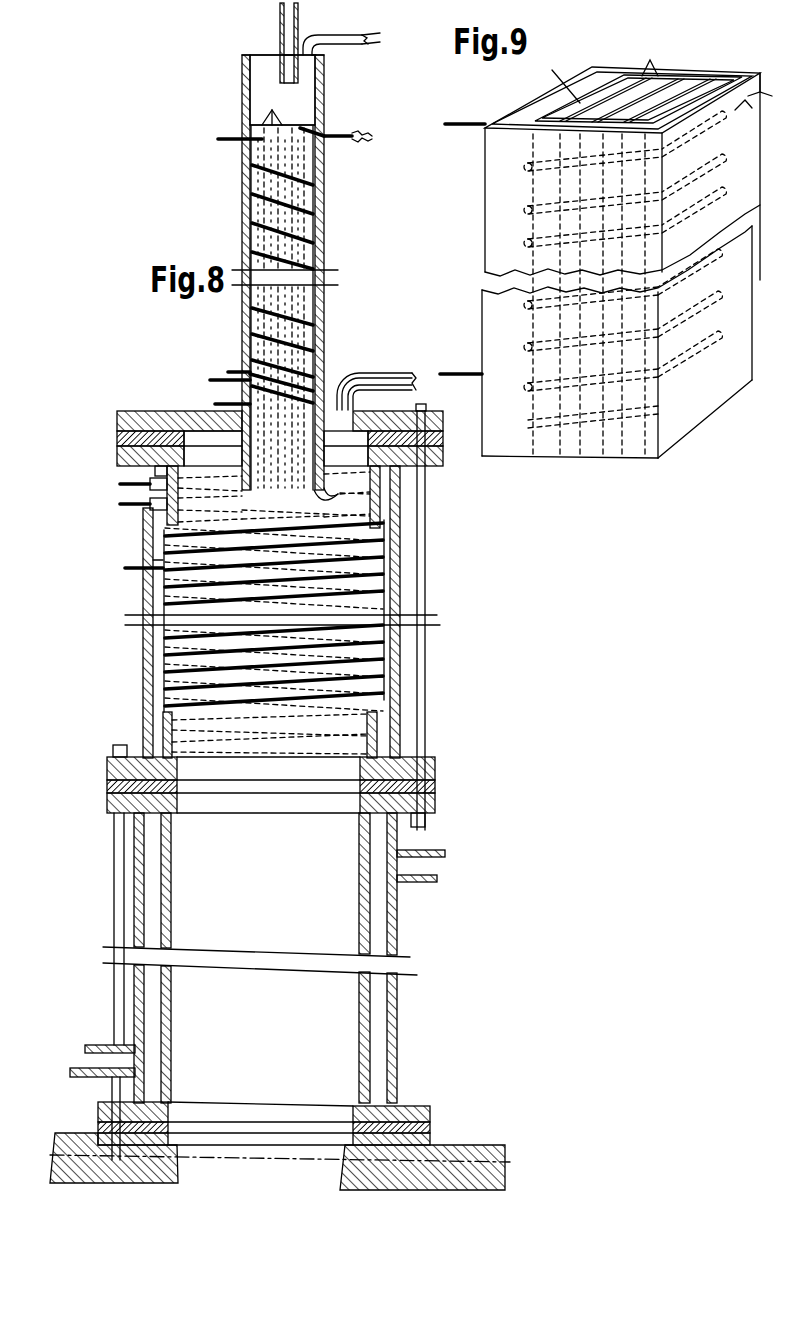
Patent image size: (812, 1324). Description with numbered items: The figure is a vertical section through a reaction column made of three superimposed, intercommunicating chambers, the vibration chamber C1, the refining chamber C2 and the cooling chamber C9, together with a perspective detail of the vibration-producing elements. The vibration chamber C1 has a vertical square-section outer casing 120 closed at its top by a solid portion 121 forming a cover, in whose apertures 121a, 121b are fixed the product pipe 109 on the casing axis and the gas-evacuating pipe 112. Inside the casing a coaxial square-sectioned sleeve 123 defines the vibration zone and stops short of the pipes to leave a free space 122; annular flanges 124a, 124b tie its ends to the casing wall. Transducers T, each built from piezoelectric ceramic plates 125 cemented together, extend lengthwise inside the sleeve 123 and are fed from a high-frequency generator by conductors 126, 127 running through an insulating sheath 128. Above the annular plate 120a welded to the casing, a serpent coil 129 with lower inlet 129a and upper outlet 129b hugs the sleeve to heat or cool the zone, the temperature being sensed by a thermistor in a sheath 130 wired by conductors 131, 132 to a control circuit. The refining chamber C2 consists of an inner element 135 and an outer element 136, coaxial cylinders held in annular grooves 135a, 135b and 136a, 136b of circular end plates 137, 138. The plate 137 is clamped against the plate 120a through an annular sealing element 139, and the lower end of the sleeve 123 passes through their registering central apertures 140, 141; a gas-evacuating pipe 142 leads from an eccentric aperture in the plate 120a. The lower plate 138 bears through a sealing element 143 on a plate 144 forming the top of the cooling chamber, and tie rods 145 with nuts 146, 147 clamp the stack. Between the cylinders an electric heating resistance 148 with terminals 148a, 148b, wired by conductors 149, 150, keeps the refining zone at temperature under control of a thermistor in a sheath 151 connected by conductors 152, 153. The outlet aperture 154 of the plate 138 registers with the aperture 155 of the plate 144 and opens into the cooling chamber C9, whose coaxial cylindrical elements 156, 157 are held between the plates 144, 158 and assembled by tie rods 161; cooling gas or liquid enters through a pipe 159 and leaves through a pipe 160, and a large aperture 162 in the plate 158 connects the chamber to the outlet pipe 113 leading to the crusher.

In FIG. 8, the pipe 109 is at (299, 30).
In FIG. 8, the gas-evacuating pipe 112 is at (336, 34).
In FIG. 8, the outlet pipe 113 is at (352, 1160).
In FIG. 8, the outer casing 120 is at (325, 190).
In FIG. 9, the outer casing 120 is at (485, 172).
In FIG. 8, the annular plate 120a is at (162, 410).
In FIG. 8, the solid portion 121 is at (260, 57).
In FIG. 8, the aperture 121a is at (286, 54).
In FIG. 8, the aperture 121b is at (326, 52).
In FIG. 8, the free space 122 is at (250, 80).
In FIG. 8, the tubular element 123 is at (322, 226).
In FIG. 9, the tubular element 123 is at (553, 103).
In FIG. 8, the annular flange 124a is at (256, 118).
In FIG. 8, the annular flange 124b is at (326, 489).
In FIG. 9, the plates 125 is at (600, 82).
In FIG. 8, the conductor 126 is at (352, 130).
In FIG. 9, the conductor 126 is at (760, 92).
In FIG. 8, the conductor 127 is at (365, 140).
In FIG. 9, the conductor 127 is at (755, 108).
In FIG. 8, the insulating sheath 128 is at (333, 140).
In FIG. 9, the insulating sheath 128 is at (722, 84).
In FIG. 8, the serpent coil 129 is at (318, 304).
In FIG. 9, the serpent coil 129 is at (532, 176).
In FIG. 8, the lower inlet 129a is at (214, 404).
In FIG. 8, the upper outlet 129b is at (224, 135).
In FIG. 8, the sheath 130 is at (240, 385).
In FIG. 8, the conductor 131 is at (230, 369).
In FIG. 8, the conductor 132 is at (212, 379).
In FIG. 8, the inner element 135 is at (401, 730).
In FIG. 8, the annular groove 135a is at (213, 448).
In FIG. 8, the annular groove 135b is at (177, 771).
In FIG. 8, the outer element 136 is at (401, 660).
In FIG. 8, the annular groove 136a is at (443, 462).
In FIG. 8, the annular groove 136b is at (435, 780).
In FIG. 8, the circular end plate 137 is at (117, 455).
In FIG. 8, the circular end plate 138 is at (113, 751).
In FIG. 8, the annular sealing element 139 is at (117, 436).
In FIG. 8, the central aperture 140 is at (368, 463).
In FIG. 8, the central aperture 141 is at (346, 448).
In FIG. 8, the gas-evacuating pipe 142 is at (380, 372).
In FIG. 8, the annular sealing element 143 is at (107, 770).
In FIG. 8, the plate 144 is at (107, 800).
In FIG. 8, the tie rods 145 is at (426, 580).
In FIG. 8, the nut 146 is at (424, 404).
In FIG. 8, the nut 147 is at (426, 824).
In FIG. 8, the electric heating resistance 148 is at (381, 560).
In FIG. 8, the terminal 148a is at (155, 474).
In FIG. 8, the terminal 148b is at (162, 512).
In FIG. 8, the conductor 149 is at (120, 484).
In FIG. 8, the conductor 150 is at (120, 504).
In FIG. 8, the sheath 151 is at (150, 582).
In FIG. 8, the conductor 152 is at (152, 560).
In FIG. 8, the conductor 153 is at (124, 568).
In FIG. 8, the outlet aperture 154 is at (360, 778).
In FIG. 8, the aperture 155 is at (360, 805).
In FIG. 8, the cylindrical element 156 is at (172, 903).
In FIG. 8, the cylindrical element 157 is at (146, 994).
In FIG. 8, the end plate 158 is at (430, 1128).
In FIG. 8, the pipe 159 is at (90, 1058).
In FIG. 8, the pipe 160 is at (432, 870).
In FIG. 8, the tie rods 161 is at (114, 890).
In FIG. 8, the aperture 162 is at (353, 1125).
In FIG. 8, the vibration chamber C1 is at (328, 262).
In FIG. 8, the refining chamber C2 is at (142, 640).
In FIG. 8, the cooling chamber C9 is at (399, 935).
In FIG. 9, the transducers T is at (598, 71).